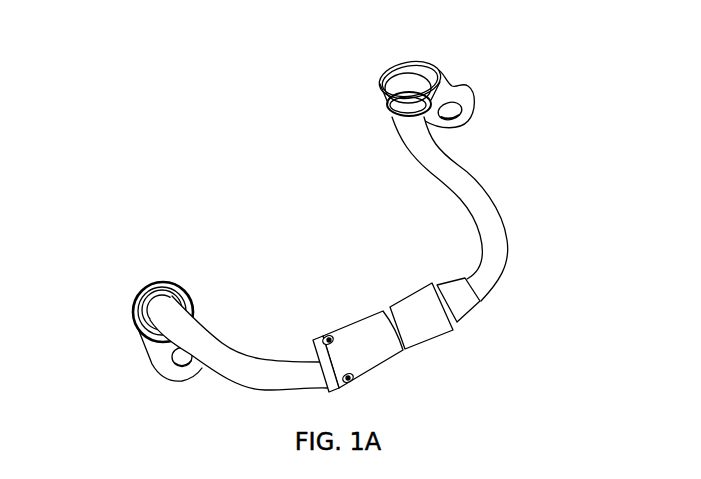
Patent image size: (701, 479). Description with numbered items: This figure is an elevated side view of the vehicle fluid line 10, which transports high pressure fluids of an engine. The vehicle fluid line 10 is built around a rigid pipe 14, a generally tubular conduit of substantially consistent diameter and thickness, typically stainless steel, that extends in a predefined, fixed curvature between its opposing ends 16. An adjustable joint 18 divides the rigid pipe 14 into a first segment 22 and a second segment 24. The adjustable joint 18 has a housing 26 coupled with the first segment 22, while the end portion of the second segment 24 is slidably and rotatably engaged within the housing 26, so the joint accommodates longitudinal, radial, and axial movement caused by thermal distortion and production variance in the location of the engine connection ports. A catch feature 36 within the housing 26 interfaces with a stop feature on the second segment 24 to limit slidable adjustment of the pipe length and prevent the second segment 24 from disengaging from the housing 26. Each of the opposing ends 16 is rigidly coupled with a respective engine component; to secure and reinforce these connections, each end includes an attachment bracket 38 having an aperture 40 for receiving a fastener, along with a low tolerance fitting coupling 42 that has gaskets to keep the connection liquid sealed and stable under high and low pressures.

The vehicle fluid line 10 is at (165, 122).
The rigid pipe 14 is at (487, 166).
The opposing ends 16 is at (477, 52).
The adjustable joint 18 is at (380, 272).
The first segment 22 is at (490, 214).
The second segment 24 is at (238, 374).
The housing 26 is at (430, 331).
The catch feature 36 is at (326, 338).
The attachment bracket 38 is at (469, 103).
The aperture 40 is at (452, 113).
The fitting coupling 42 is at (400, 83).